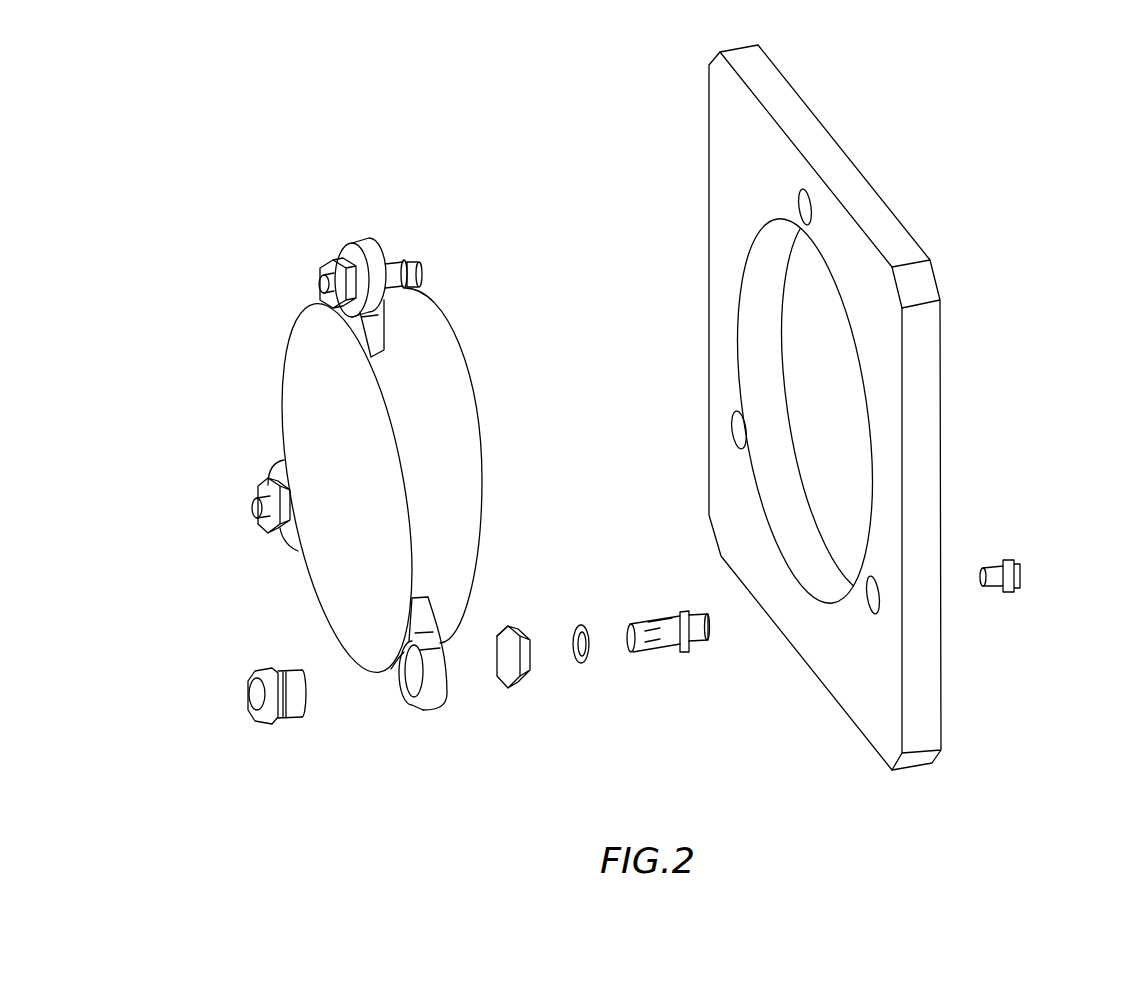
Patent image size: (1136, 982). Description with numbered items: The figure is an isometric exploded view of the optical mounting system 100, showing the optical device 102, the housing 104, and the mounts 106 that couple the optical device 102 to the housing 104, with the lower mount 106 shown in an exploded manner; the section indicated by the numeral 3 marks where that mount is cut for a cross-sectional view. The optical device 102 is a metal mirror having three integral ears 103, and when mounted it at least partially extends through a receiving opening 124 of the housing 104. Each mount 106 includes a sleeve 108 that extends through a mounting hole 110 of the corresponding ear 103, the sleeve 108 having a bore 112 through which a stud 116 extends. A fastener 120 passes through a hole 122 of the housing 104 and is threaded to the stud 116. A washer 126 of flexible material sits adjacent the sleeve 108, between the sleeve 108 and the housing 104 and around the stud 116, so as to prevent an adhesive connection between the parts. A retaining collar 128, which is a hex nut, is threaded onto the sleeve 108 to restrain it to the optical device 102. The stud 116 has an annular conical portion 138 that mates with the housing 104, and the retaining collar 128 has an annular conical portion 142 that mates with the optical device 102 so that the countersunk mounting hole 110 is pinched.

The optical mounting system 100 is at (879, 407).
The optical device 102 is at (317, 405).
The ear 103 is at (392, 706).
The housing 104 is at (851, 268).
The mount 106 is at (312, 222).
The sleeve 108 is at (242, 726).
The mounting hole 110 is at (418, 672).
The bore 112 is at (248, 693).
The stud 116 is at (664, 647).
The fastener 120 is at (998, 599).
The hole 122 is at (800, 207).
The receiving opening 124 is at (837, 457).
The washer 126 is at (587, 669).
The retaining collar 128 is at (512, 671).
The annular conical portion 138 is at (684, 611).
The annular conical portion 142 is at (498, 635).
The section line 3 is at (240, 700).